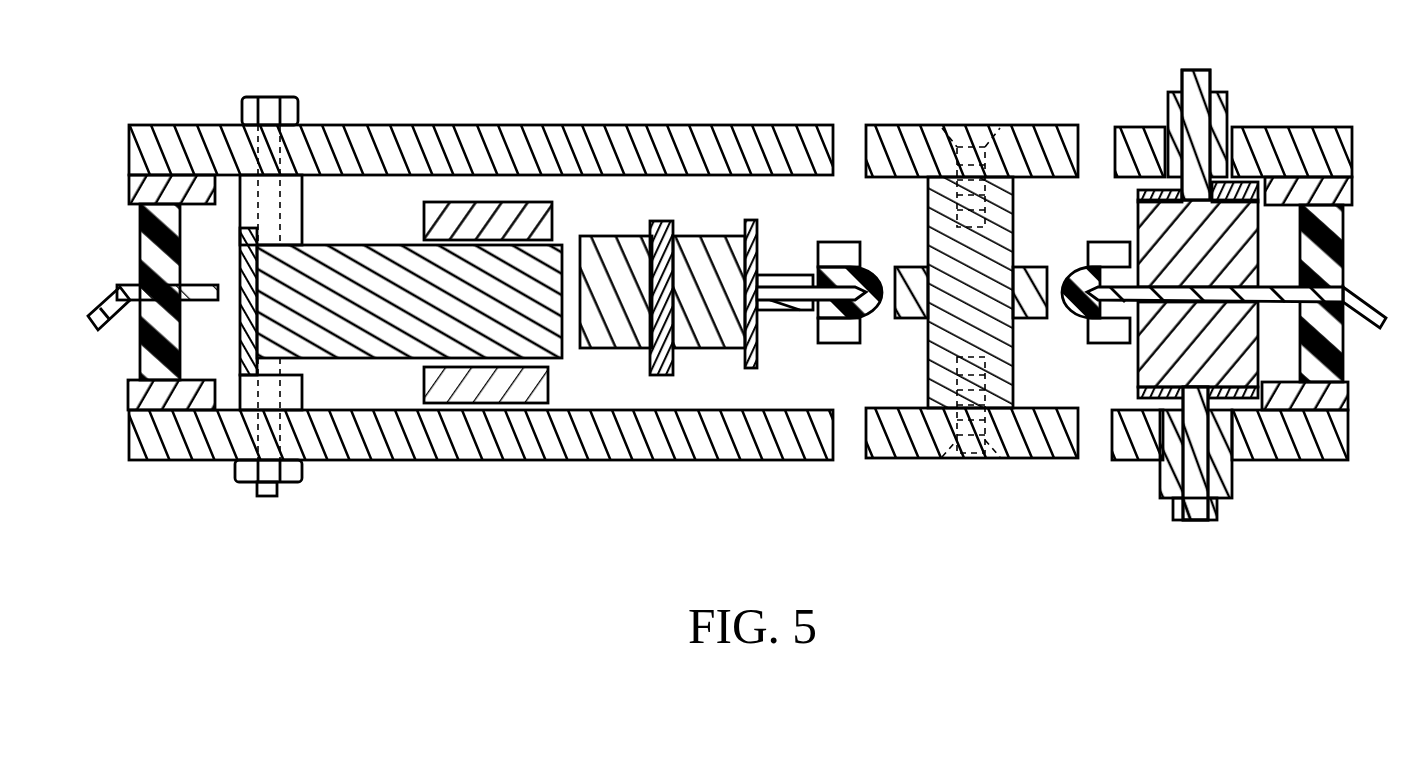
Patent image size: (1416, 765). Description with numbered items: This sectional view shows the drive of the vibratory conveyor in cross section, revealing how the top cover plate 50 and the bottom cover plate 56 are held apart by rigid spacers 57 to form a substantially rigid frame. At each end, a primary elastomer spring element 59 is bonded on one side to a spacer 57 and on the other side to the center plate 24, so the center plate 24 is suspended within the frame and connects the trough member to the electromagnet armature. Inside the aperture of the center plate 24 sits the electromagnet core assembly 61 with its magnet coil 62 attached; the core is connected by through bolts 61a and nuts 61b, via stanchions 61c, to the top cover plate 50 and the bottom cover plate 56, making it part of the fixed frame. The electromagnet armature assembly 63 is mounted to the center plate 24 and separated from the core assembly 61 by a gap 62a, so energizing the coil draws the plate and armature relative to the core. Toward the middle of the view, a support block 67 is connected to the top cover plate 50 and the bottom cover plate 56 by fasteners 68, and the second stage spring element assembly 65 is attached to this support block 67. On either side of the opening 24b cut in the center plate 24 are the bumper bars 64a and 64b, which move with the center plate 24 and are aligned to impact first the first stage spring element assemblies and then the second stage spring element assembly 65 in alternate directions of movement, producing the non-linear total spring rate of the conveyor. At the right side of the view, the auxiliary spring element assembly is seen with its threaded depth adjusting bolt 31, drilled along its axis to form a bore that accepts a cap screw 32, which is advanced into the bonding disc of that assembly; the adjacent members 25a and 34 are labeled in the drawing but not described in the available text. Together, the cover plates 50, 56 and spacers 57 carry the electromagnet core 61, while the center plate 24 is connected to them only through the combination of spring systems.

The center plate 24 is at (120, 290).
The opening 24b is at (880, 318).
The bearing spacer 25a is at (1266, 243).
The threaded depth adjusting bolt 31 is at (1238, 106).
The cap screw 32 is at (1200, 70).
The holder block 34 is at (1198, 290).
The top cover plate 50 is at (553, 125).
The bottom cover plate 56 is at (563, 460).
The rigid spacer 57 is at (130, 192).
The primary elastomer spring element 59 is at (140, 232).
The electromagnet core assembly 61 is at (413, 360).
The through bolt 61a is at (296, 98).
The nut 61b is at (240, 470).
The stanchion 61c is at (302, 200).
The magnet coil 62 is at (505, 403).
The gap 62a is at (572, 252).
The electromagnet armature assembly 63 is at (712, 350).
The bumper bar 64a is at (1076, 272).
The bumper bar 64b is at (878, 276).
The second stage spring element assembly 65 is at (910, 320).
The support block 67 is at (927, 392).
The fastener 68 is at (1003, 190).